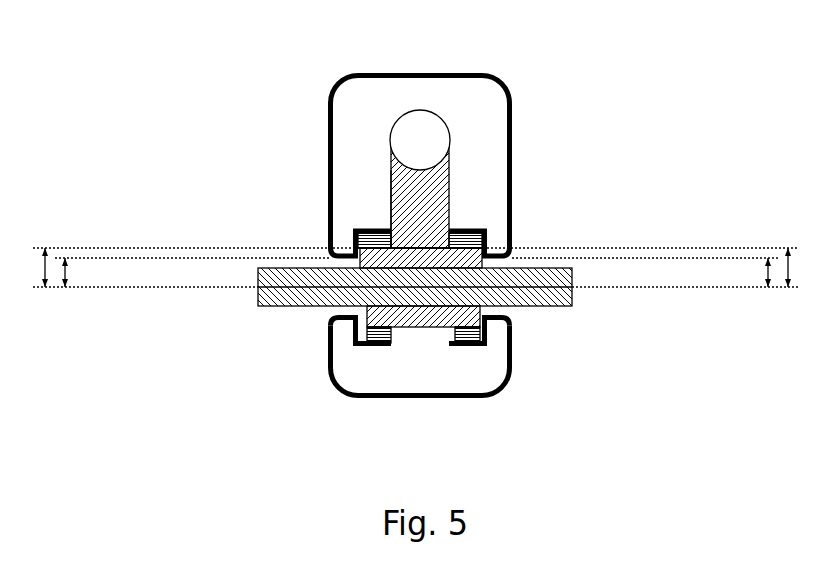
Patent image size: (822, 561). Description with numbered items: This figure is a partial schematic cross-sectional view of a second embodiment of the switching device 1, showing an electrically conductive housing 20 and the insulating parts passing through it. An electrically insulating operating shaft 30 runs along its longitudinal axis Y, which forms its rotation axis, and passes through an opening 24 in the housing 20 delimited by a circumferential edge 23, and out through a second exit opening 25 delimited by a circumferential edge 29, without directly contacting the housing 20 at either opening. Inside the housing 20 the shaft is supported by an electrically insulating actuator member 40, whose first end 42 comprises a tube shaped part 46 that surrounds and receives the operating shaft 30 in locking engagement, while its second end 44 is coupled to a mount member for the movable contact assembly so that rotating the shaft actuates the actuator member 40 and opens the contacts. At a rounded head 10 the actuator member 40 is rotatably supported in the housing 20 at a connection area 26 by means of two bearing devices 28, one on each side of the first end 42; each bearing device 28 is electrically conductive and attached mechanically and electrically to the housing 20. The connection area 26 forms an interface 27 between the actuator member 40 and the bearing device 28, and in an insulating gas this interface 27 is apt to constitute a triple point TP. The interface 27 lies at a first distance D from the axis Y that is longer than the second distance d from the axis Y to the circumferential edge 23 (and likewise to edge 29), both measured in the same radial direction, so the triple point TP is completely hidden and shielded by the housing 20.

The fastening assembly 1 is at (560, 100).
The ball head 10 is at (424, 106).
The housing 20 is at (518, 157).
The circumferential edge 23 is at (511, 260).
The opening 24 is at (500, 263).
The second exit opening 25 is at (300, 307).
The connection area 26 is at (365, 248).
The interface 27 is at (370, 240).
The bearing device 28 is at (383, 233).
The circumferential edge 29 is at (355, 265).
The operating shaft 30 is at (572, 280).
The actuator member 40 is at (450, 175).
The first end 42 is at (468, 248).
The second end 44 is at (392, 183).
The tube shaped part 46 is at (490, 238).
The triple point TP is at (360, 255).
The longitudinal axis Y is at (236, 288).
The first distance D is at (419, 267).
The second distance d is at (417, 272).